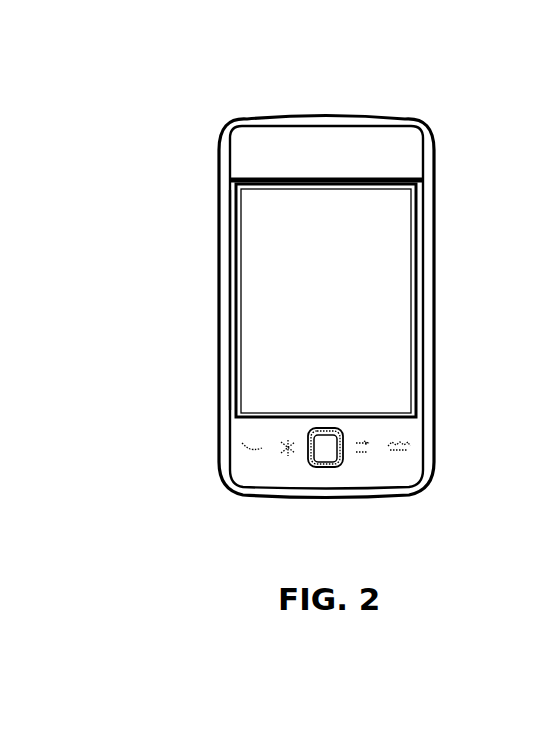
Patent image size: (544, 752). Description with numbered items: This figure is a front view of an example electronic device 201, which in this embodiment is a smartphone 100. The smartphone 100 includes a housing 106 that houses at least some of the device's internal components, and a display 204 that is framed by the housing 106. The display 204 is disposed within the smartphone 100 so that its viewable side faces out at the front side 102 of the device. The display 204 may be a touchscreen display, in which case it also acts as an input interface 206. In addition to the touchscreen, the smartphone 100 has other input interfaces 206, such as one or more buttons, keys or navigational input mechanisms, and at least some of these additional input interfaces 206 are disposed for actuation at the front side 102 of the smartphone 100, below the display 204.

The smartphone 100 is at (329, 267).
The electronic device 201 is at (329, 279).
The housing 106 is at (435, 198).
The display 204 is at (238, 255).
The input interface 206 is at (238, 322).
The front side 102 is at (235, 431).